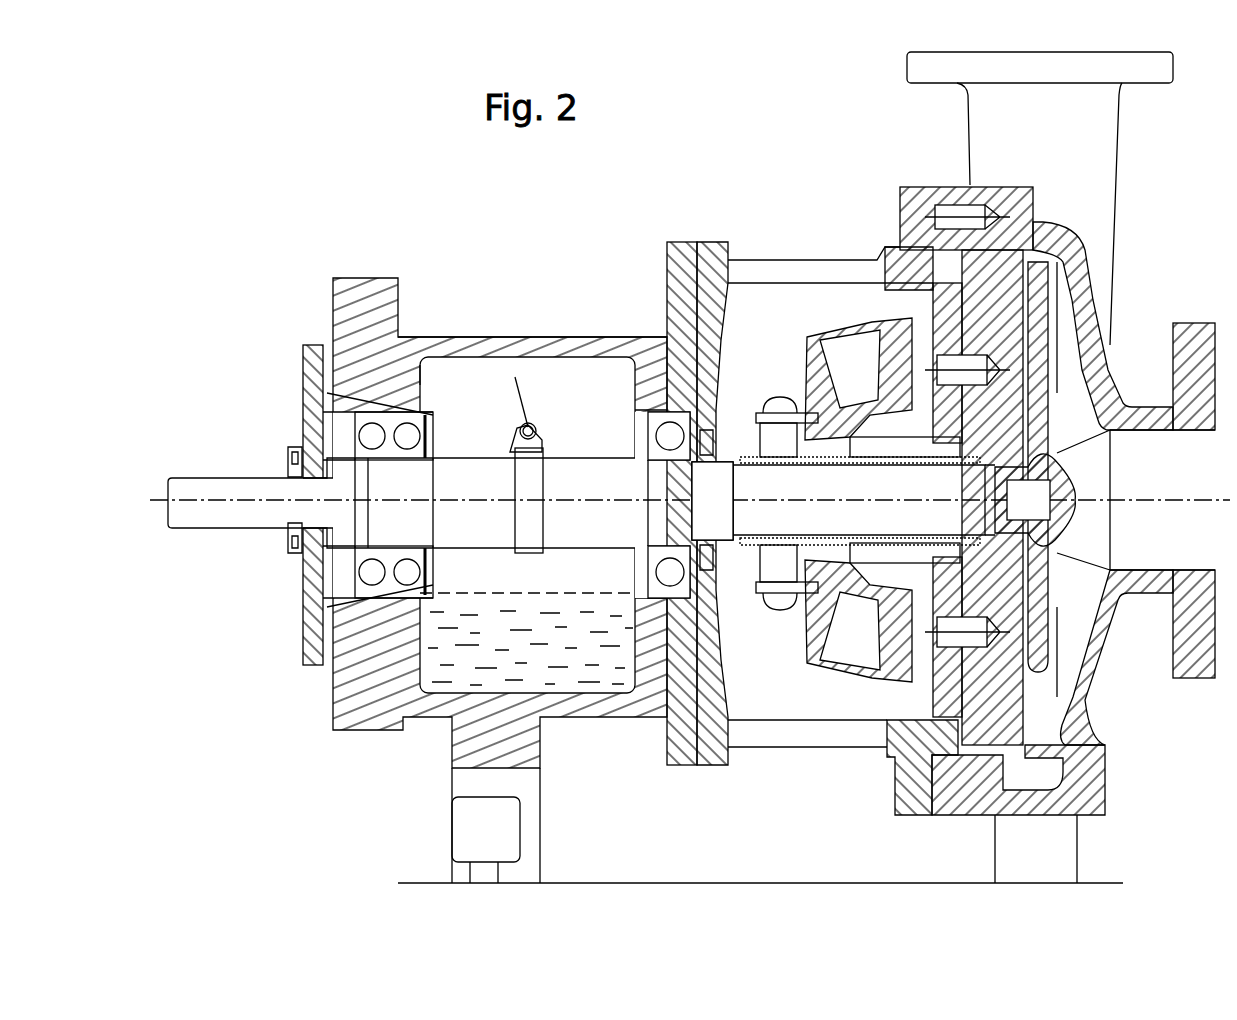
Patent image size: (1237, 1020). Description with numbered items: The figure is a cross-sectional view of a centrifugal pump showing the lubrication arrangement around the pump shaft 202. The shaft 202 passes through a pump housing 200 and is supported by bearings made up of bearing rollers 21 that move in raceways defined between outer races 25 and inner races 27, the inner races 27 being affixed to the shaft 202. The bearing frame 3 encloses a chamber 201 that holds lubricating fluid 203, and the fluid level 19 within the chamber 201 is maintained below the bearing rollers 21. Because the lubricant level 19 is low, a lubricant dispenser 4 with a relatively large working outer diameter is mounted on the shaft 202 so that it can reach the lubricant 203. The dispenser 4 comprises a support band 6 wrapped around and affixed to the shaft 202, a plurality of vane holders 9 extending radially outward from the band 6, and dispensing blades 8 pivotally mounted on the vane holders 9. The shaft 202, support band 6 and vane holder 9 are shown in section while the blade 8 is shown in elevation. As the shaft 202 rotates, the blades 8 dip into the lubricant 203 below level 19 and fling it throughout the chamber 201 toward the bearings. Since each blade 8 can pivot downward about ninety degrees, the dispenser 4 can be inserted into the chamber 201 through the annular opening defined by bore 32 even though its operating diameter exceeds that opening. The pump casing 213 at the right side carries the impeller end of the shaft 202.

The bearing frame 3 is at (551, 342).
The lubricant dispenser 4 is at (508, 431).
The support band 6 is at (533, 483).
The dispensing blades 8 is at (529, 392).
The vane holder 9 is at (543, 444).
The lubricating fluid level 19 is at (565, 593).
The bearing rollers 21 is at (367, 437).
The outer races 25 is at (345, 594).
The inner races 27 is at (372, 560).
The bore 32 is at (634, 432).
The bearing housing 200 is at (353, 720).
The chamber 201 is at (443, 395).
The pump shaft 202 is at (436, 533).
The lubricating fluid 203 is at (595, 675).
The pump casing 213 is at (1072, 357).